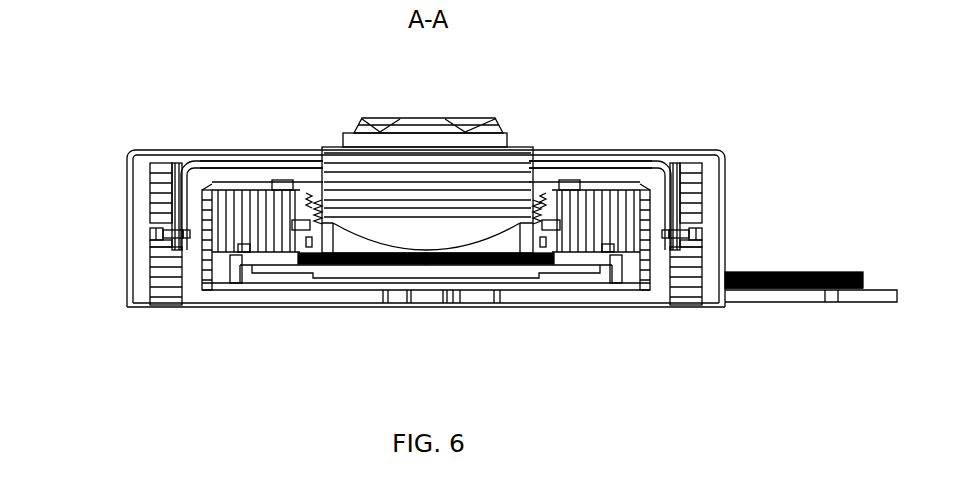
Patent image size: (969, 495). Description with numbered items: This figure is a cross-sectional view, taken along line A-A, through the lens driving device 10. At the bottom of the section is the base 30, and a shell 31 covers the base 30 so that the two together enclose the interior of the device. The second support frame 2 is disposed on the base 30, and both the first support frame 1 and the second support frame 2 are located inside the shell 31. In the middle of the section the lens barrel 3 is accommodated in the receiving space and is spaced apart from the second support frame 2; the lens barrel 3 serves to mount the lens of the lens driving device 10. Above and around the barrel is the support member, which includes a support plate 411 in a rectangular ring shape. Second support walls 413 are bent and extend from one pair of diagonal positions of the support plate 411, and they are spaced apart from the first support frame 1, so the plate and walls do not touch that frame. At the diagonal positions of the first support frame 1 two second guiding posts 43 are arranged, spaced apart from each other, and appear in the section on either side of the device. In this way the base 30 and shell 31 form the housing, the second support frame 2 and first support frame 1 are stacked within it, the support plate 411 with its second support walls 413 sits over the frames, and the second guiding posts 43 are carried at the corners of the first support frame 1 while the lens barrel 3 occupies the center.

The lens driving device 10 is at (490, 157).
The support plate 411 is at (253, 163).
The lens barrel 3 is at (250, 197).
The first support frame 1 is at (185, 203).
The second support wall 413 is at (172, 218).
The second guiding post 43 is at (160, 235).
The second support frame 2 is at (160, 287).
The shell 31 is at (683, 150).
The base 30 is at (683, 307).